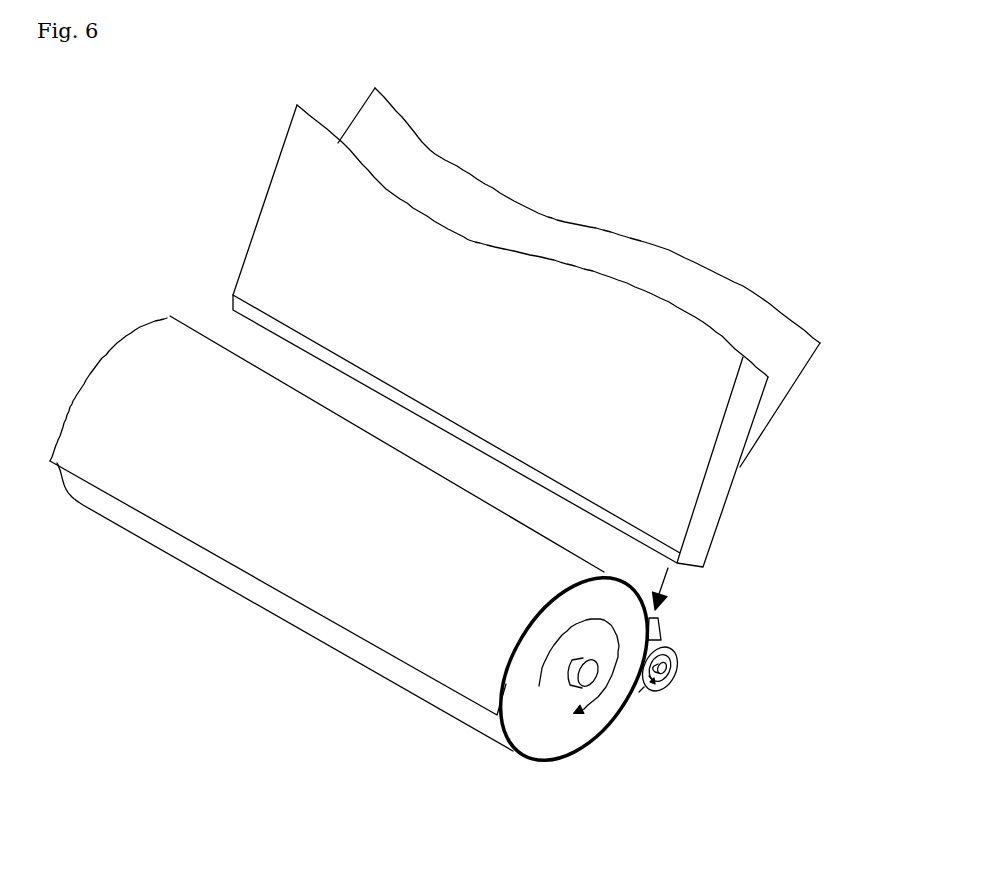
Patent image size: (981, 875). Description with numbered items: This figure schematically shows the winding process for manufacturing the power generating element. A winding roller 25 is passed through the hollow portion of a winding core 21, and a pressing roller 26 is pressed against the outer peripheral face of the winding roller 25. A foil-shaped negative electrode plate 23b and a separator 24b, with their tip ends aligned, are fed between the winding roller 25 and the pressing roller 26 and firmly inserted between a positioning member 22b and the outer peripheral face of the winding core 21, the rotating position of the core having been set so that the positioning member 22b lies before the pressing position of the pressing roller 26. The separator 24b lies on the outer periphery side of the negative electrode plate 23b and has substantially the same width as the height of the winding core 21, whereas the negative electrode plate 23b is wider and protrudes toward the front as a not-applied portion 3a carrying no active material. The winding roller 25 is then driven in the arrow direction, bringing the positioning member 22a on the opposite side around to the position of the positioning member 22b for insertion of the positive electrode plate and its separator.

The winding core 21 is at (199, 568).
The positioning member 22a is at (307, 611).
The positioning member 22b is at (658, 626).
The foil-shaped negative electrode plate 23b is at (528, 253).
The separator 24b is at (653, 238).
The winding roller 25 is at (550, 750).
The pressing roller 26 is at (675, 690).
The not-applied portion 3a is at (723, 517).